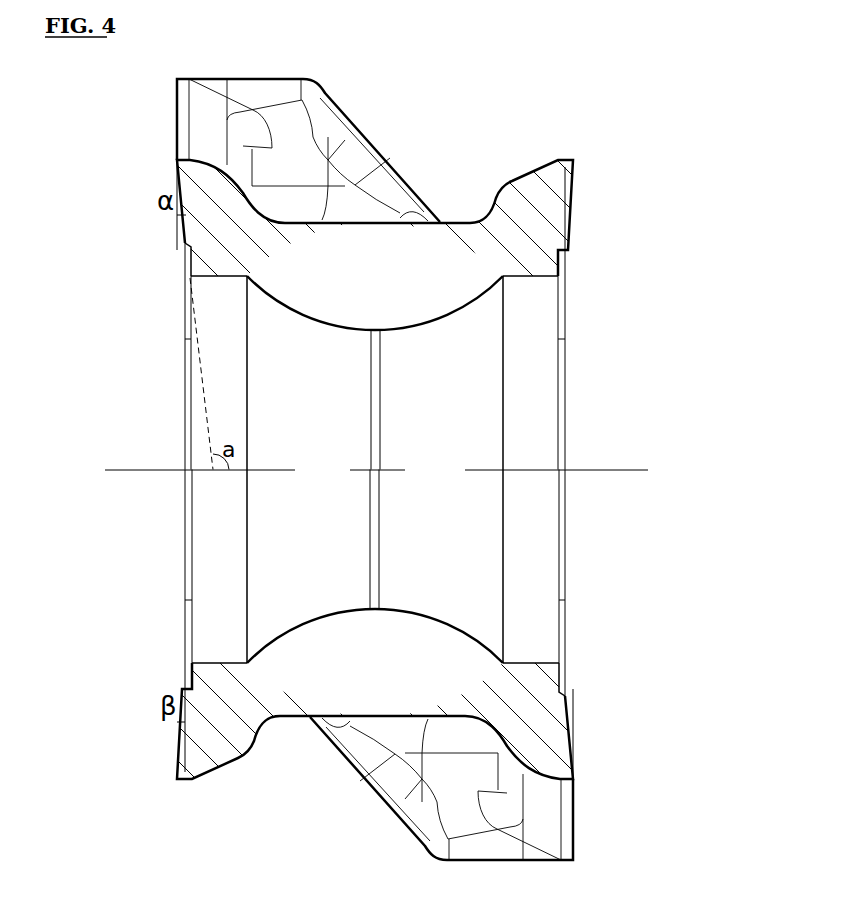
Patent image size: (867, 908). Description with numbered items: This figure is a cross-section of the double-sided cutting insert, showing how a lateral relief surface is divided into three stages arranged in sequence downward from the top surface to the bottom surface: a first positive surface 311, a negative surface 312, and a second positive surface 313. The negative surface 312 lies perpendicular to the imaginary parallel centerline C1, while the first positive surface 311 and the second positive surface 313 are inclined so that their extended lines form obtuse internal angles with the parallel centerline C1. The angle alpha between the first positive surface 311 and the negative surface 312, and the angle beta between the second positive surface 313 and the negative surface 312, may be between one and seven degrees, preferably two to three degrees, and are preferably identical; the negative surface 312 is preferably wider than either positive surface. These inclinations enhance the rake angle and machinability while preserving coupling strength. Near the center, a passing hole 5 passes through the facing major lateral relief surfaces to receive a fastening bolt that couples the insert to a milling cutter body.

The first positive surface 311 is at (178, 188).
The negative surface 312 is at (184, 233).
The second positive surface 313 is at (177, 748).
The passing hole 5 is at (538, 500).
The parallel centerline C1 is at (401, 471).